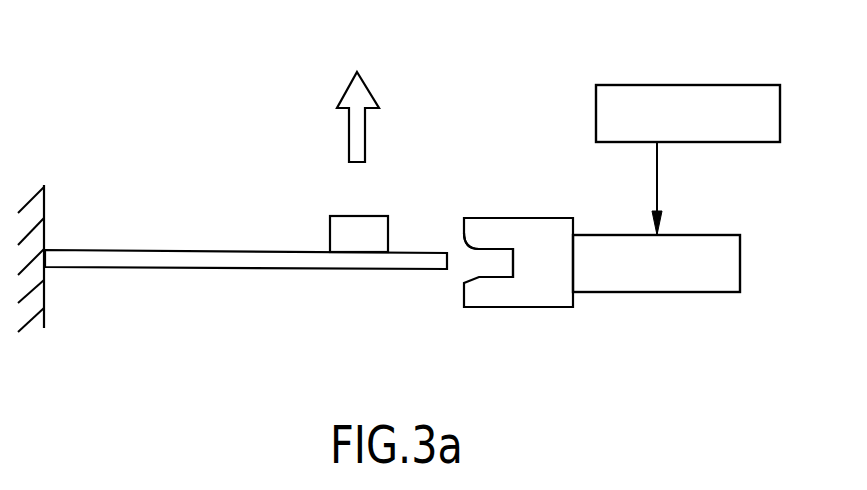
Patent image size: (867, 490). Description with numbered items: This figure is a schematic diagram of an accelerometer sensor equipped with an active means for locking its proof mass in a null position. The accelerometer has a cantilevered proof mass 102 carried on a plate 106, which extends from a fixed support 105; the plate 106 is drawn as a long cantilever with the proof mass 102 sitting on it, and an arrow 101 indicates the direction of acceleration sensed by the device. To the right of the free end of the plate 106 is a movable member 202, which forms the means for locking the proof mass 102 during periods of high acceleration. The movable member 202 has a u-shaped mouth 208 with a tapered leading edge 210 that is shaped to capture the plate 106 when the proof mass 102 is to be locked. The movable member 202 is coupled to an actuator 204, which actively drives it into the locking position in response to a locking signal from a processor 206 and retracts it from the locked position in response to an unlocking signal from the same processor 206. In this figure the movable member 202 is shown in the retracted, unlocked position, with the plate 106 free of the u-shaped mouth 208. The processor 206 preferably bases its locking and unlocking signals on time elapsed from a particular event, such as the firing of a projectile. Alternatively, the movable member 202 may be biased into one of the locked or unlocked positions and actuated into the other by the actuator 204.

The acceleration direction arrow 101 is at (372, 90).
The proof mass 102 is at (348, 214).
The fixed support wall 105 is at (46, 208).
The plate 106 is at (328, 268).
The movable member 202 is at (522, 308).
The actuator 204 is at (707, 235).
The processor 206 is at (677, 85).
The u-shaped mouth 208 is at (499, 264).
The tapered leading edge 210 is at (478, 243).